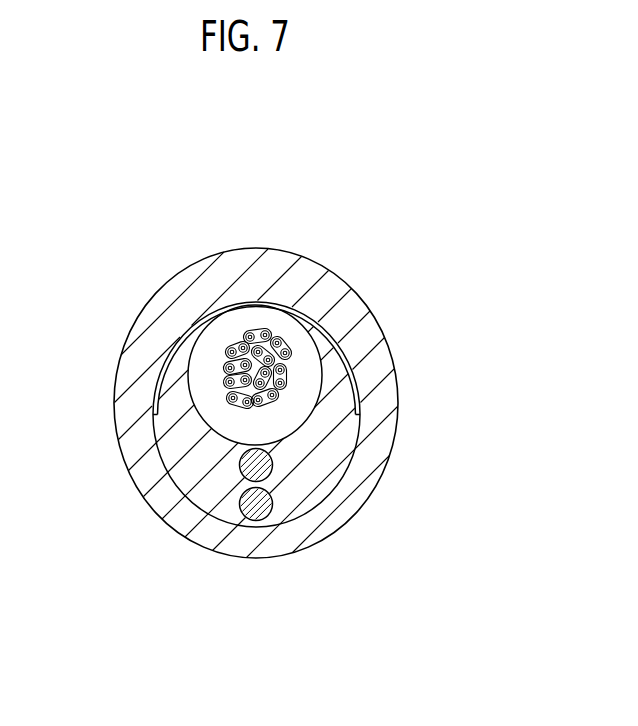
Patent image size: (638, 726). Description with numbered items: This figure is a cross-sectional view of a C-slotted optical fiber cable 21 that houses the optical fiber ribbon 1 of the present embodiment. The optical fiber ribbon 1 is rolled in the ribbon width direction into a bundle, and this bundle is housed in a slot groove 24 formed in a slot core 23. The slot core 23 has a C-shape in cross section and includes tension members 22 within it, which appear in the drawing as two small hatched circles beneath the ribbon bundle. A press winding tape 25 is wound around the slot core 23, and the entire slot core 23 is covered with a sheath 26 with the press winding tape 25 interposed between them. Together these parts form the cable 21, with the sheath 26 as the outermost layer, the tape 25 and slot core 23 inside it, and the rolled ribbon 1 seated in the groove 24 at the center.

The optical fiber ribbon 1 is at (248, 333).
The C-slotted optical fiber cable 21 is at (368, 288).
The tension members 22 is at (273, 475).
The slot core 23 is at (197, 480).
The slot groove 24 is at (312, 408).
The press winding tape 25 is at (197, 324).
The sheath 26 is at (128, 372).